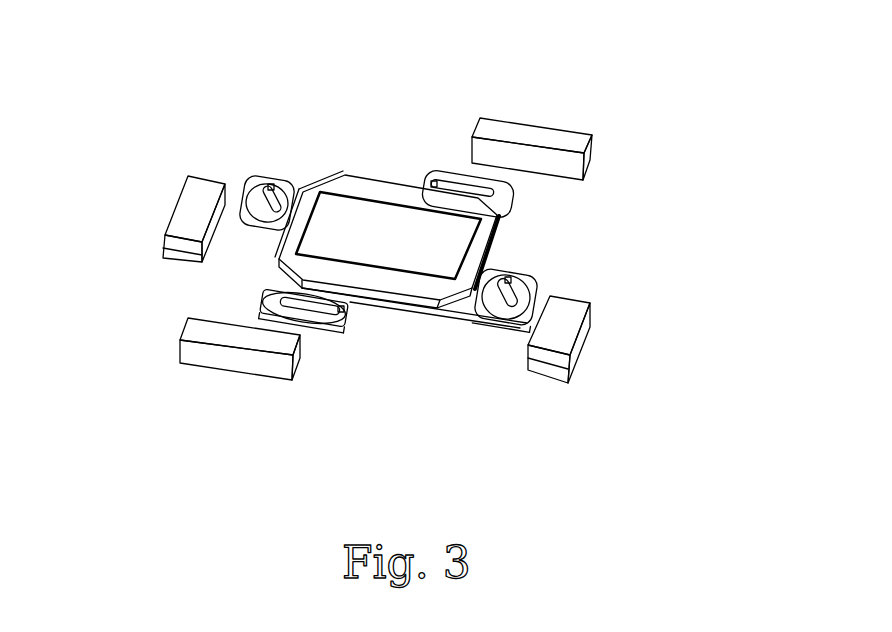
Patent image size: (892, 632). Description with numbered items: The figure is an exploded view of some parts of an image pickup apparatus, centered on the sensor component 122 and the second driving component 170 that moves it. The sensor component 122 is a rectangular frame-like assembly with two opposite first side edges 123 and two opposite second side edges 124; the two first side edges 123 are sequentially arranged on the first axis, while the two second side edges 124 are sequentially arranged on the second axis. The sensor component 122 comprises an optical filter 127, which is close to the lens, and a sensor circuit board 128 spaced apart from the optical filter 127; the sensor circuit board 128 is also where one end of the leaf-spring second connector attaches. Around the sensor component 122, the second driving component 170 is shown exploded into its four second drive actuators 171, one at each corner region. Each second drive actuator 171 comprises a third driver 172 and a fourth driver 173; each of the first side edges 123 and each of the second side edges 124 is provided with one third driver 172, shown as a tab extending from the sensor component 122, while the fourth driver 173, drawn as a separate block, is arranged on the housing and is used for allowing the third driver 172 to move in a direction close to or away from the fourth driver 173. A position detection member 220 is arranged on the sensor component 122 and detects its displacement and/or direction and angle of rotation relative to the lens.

The sensor component 122 is at (447, 339).
The first side edge 123 is at (390, 183).
The second side edge 124 is at (282, 242).
The optical filter 127 is at (404, 247).
The sensor circuit board 128 is at (468, 317).
The second driving component 170 is at (392, 269).
The second drive actuator 171 is at (392, 236).
The third driver 172 is at (457, 182).
The fourth driver 173 is at (532, 133).
The position detection member 220 is at (523, 277).